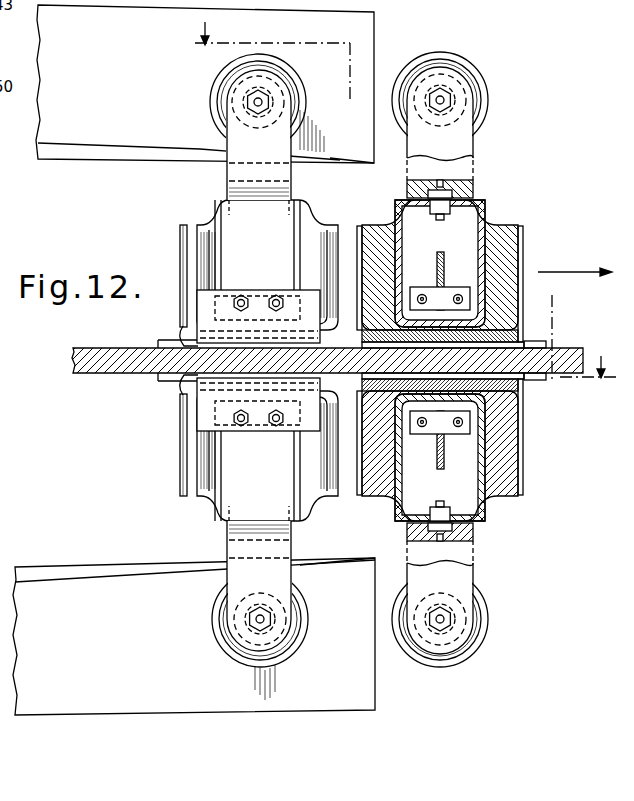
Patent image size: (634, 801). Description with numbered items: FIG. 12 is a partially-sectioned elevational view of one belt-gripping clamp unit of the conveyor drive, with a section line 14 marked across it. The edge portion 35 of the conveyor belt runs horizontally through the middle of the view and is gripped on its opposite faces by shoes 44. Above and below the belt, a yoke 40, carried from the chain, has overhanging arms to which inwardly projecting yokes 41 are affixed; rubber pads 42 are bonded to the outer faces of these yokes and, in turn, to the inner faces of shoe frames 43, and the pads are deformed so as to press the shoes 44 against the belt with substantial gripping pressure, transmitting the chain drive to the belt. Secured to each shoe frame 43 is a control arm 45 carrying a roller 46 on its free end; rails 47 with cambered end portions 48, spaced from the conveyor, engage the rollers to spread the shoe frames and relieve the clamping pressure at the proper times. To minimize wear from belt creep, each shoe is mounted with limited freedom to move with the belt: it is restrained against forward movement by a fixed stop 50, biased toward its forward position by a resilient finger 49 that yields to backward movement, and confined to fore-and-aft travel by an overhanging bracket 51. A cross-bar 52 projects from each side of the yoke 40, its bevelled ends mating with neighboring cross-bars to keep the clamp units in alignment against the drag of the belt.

The section line 14- 14 is at (398, 198).
The edge portion of the conveyor belt 35 is at (116, 372).
The yoke 40 is at (474, 190).
The inwardly projecting yoke 41 is at (388, 213).
The rubber pad 42 is at (493, 232).
The shoe frame 43 is at (522, 250).
The shoe 44 is at (514, 336).
The control arm 45 is at (282, 178).
The roller 46 is at (214, 106).
The rail 47 is at (140, 158).
The cambered end portion 48 is at (352, 160).
The finger 49 is at (181, 337).
The fixed stop 50 is at (522, 346).
The overhanging bracket 51 is at (256, 328).
The cross-bar 52 is at (157, 343).